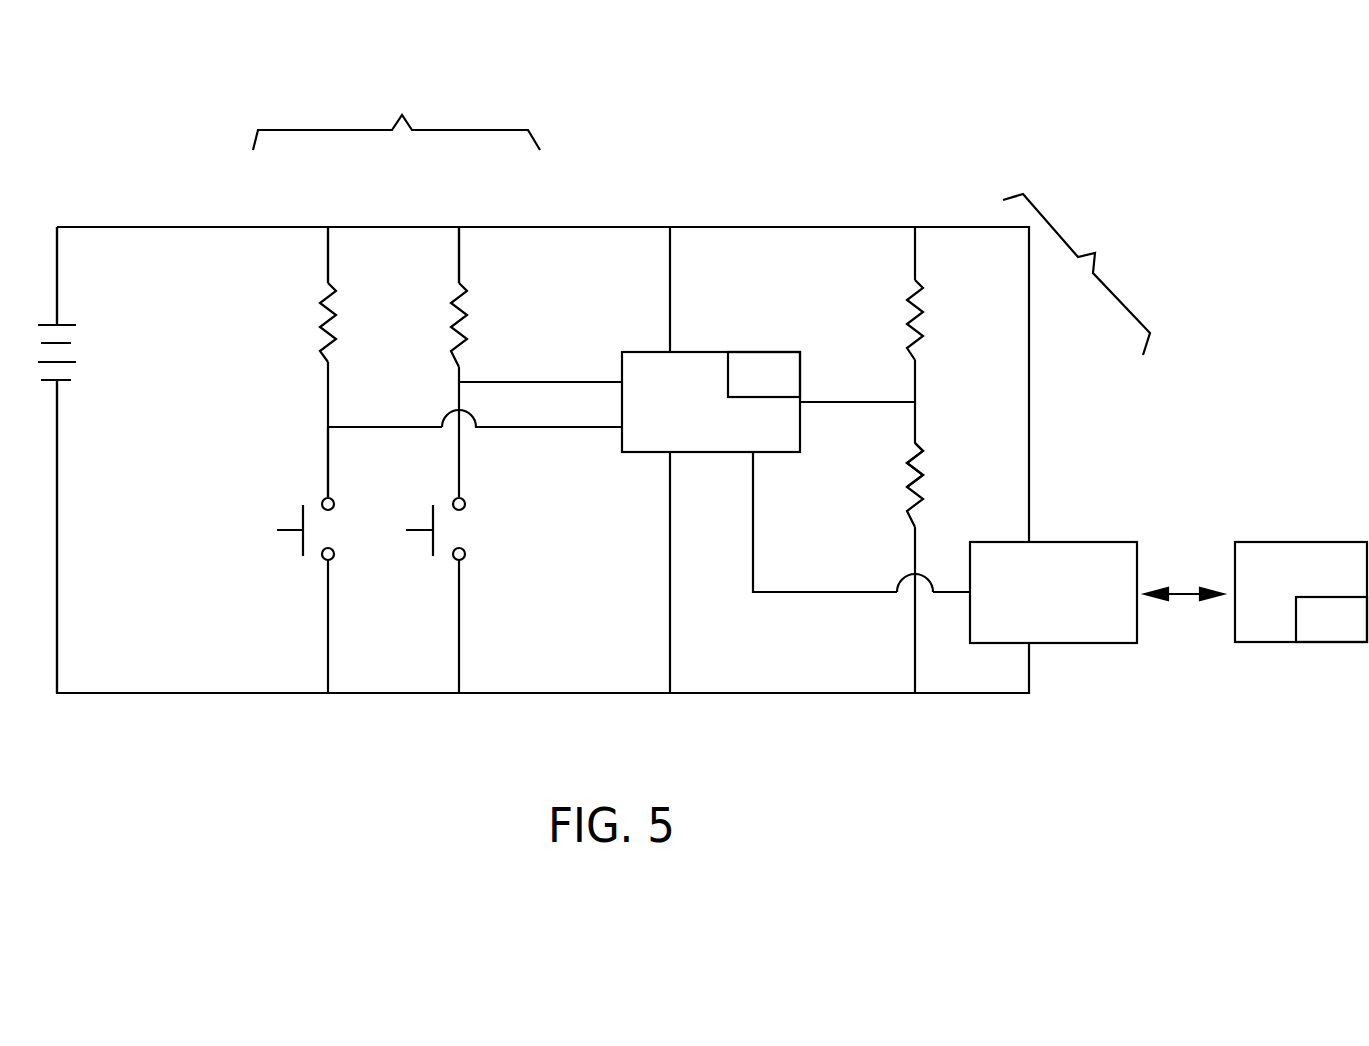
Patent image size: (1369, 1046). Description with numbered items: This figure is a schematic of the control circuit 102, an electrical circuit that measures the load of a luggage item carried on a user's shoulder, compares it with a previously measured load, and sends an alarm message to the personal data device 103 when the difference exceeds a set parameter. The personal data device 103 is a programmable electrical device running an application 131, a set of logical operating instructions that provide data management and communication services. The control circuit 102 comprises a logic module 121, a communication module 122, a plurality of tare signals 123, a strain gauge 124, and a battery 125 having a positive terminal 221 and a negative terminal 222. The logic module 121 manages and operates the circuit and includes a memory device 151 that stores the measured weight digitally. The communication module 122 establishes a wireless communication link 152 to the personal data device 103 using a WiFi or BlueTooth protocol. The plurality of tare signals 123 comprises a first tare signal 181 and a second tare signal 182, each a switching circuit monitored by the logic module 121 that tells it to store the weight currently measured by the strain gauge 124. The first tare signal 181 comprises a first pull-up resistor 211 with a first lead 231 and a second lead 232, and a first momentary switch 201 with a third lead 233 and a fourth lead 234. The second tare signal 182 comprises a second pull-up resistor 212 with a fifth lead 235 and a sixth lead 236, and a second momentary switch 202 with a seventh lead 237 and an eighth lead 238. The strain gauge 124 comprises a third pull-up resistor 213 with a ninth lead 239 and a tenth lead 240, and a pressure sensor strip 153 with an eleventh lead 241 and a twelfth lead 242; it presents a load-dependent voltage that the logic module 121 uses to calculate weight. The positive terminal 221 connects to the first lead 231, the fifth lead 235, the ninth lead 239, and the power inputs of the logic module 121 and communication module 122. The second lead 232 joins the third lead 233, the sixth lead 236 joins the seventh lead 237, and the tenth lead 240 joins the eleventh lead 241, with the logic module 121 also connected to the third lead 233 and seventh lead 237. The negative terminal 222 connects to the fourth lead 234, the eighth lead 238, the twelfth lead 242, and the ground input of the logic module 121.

The control circuit 102 is at (90, 197).
The personal data device 103 is at (1302, 542).
The logic module 121 is at (705, 352).
The communication module 122 is at (1116, 552).
The plurality of tare signals 123 is at (396, 113).
The strain gauge 124 is at (1097, 253).
The battery 125 is at (75, 350).
The application 131 is at (1325, 645).
The memory device 151 is at (766, 357).
The wireless communication link 152 is at (1183, 592).
The pressure sensor strip 153 is at (925, 470).
The first tare signal 181 is at (328, 226).
The second tare signal 182 is at (460, 226).
The first momentary switch 201 is at (277, 545).
The second momentary switch 202 is at (462, 538).
The first pull-up resistor 211 is at (320, 298).
The second pull-up resistor 212 is at (468, 304).
The third pull-up resistor 213 is at (924, 335).
The positive terminal 221 is at (57, 308).
The negative terminal 222 is at (57, 412).
The first lead 231 is at (328, 254).
The second lead 232 is at (328, 408).
The third lead 233 is at (328, 482).
The fourth lead 234 is at (328, 577).
The fifth lead 235 is at (459, 245).
The sixth lead 236 is at (459, 374).
The seventh lead 237 is at (459, 485).
The eighth lead 238 is at (459, 570).
The ninth lead 239 is at (915, 247).
The tenth lead 240 is at (915, 382).
The eleventh lead 241 is at (915, 425).
The twelfth lead 242 is at (915, 538).